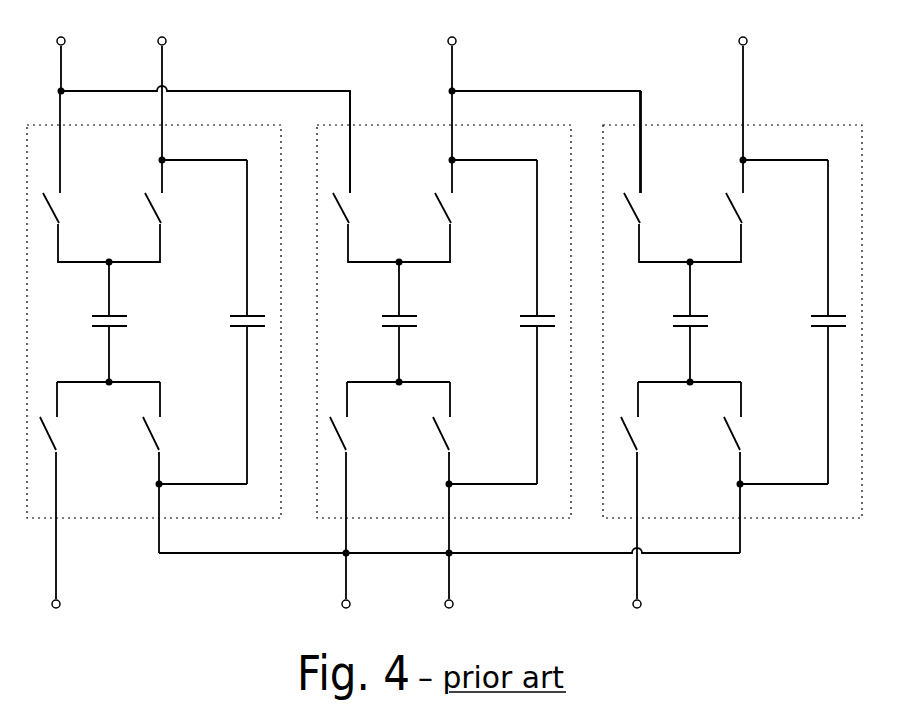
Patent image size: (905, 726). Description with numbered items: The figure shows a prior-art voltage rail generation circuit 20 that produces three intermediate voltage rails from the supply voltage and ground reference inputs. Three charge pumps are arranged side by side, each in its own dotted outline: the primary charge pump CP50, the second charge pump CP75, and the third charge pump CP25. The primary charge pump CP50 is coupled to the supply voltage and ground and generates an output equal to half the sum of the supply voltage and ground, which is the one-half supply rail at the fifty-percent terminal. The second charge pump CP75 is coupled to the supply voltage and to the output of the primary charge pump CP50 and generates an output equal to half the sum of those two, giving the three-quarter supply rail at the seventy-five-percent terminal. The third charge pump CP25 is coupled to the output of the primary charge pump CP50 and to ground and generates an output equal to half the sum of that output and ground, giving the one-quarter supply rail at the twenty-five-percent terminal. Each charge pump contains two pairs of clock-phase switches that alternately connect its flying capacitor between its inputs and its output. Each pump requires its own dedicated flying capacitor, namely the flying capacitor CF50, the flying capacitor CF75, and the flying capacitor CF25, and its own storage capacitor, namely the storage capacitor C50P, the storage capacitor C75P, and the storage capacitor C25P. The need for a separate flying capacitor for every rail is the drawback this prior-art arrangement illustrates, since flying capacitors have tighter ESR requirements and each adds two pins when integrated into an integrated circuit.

The voltage rail generation circuit 20 is at (444, 346).
The second charge pump CP75 is at (154, 322).
The primary charge pump CP50 is at (444, 322).
The third charge pump CP25 is at (732, 322).
The flying capacitor CF75 is at (83, 322).
The storage capacitor C75P is at (220, 322).
The flying capacitor CF50 is at (373, 322).
The storage capacitor C50P is at (510, 322).
The flying capacitor CF25 is at (664, 322).
The storage capacitor C25P is at (801, 322).